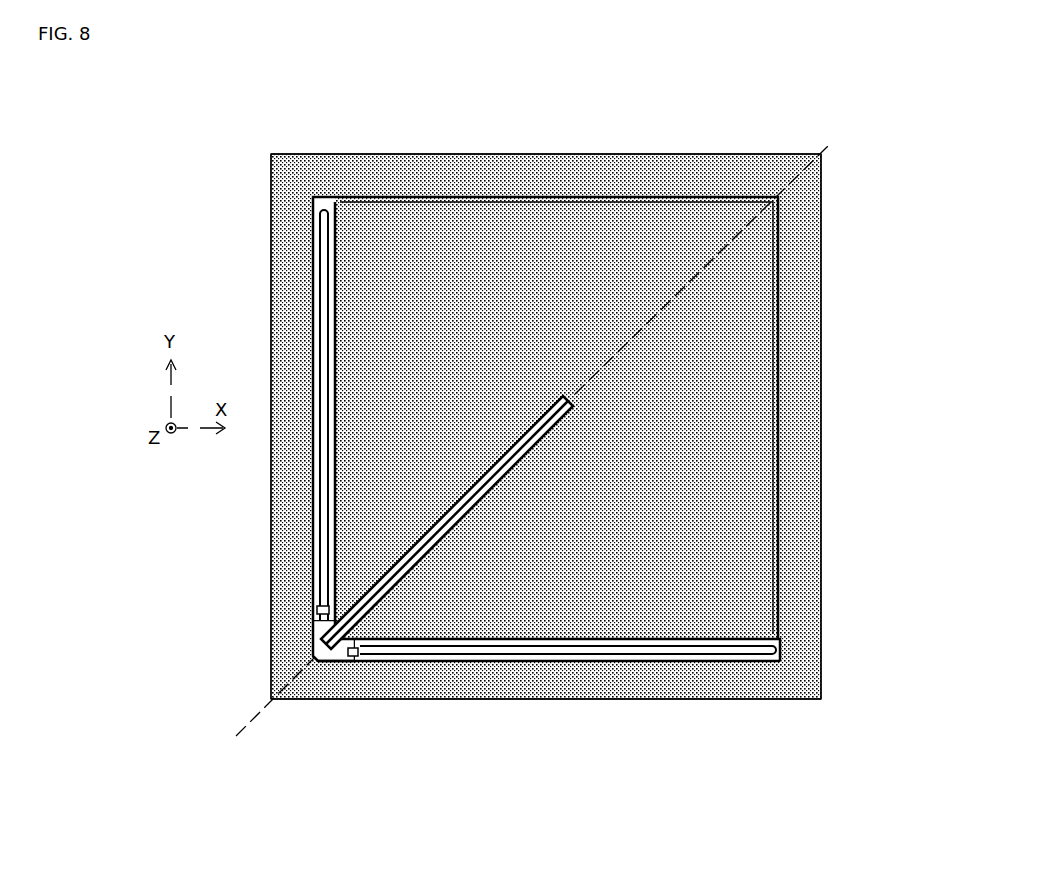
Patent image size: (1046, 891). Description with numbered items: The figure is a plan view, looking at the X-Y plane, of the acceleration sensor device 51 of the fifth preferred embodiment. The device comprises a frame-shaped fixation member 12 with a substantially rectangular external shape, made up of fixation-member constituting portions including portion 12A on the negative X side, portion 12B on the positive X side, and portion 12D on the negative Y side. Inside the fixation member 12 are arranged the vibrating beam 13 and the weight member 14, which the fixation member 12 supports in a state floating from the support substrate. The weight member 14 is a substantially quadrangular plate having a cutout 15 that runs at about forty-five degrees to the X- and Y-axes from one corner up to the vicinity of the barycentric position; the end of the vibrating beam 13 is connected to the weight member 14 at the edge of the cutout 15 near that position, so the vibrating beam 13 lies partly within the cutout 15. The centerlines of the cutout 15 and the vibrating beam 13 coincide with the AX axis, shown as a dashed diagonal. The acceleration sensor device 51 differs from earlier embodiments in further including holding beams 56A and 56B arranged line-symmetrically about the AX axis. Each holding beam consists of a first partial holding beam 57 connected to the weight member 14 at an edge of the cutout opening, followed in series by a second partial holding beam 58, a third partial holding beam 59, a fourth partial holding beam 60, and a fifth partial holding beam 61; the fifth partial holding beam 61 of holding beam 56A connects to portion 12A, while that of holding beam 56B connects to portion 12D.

The acceleration sensor device 51 is at (838, 95).
The fixation member 12 is at (262, 144).
The fixation-member constituting portion 12A is at (268, 268).
The fixation-member constituting portion 12B is at (680, 147).
The fixation-member constituting portion 12D is at (681, 695).
The vibrating beam 13 is at (310, 630).
The weight member 14 is at (556, 606).
The cutout 15 is at (324, 654).
The holding beam 56A is at (306, 506).
The holding beam 56B is at (437, 654).
The first partial holding beam 57 is at (312, 590).
The second partial holding beam 58 is at (320, 460).
The third partial holding beam 59 is at (313, 205).
The fourth partial holding beam 60 is at (308, 340).
The fifth partial holding beam 61 is at (314, 600).
The AX axis AX is at (542, 430).